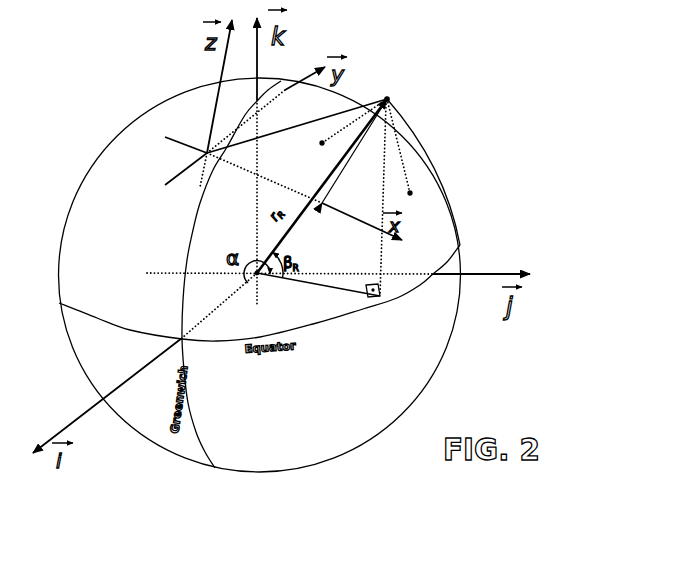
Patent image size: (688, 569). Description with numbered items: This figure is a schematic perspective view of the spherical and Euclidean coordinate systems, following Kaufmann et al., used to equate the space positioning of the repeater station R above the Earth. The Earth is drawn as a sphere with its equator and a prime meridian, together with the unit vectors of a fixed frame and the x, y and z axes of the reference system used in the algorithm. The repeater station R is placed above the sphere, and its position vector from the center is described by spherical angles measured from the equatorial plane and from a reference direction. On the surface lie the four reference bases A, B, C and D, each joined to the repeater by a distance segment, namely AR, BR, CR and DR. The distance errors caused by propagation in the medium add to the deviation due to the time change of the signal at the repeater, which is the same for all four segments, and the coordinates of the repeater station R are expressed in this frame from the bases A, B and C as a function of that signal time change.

The reference base A is at (200, 139).
The repeater station R is at (397, 100).
The reference base B is at (350, 165).
The reference base C is at (314, 145).
The reference base D is at (420, 195).